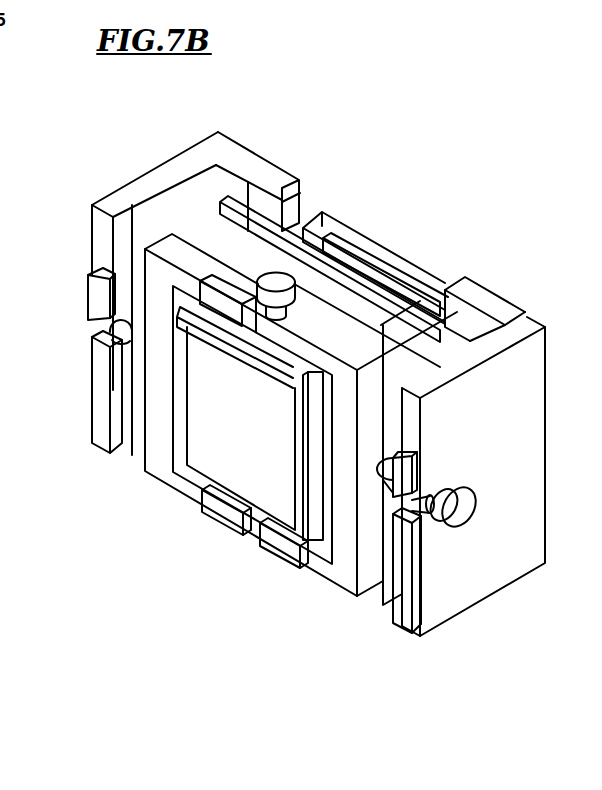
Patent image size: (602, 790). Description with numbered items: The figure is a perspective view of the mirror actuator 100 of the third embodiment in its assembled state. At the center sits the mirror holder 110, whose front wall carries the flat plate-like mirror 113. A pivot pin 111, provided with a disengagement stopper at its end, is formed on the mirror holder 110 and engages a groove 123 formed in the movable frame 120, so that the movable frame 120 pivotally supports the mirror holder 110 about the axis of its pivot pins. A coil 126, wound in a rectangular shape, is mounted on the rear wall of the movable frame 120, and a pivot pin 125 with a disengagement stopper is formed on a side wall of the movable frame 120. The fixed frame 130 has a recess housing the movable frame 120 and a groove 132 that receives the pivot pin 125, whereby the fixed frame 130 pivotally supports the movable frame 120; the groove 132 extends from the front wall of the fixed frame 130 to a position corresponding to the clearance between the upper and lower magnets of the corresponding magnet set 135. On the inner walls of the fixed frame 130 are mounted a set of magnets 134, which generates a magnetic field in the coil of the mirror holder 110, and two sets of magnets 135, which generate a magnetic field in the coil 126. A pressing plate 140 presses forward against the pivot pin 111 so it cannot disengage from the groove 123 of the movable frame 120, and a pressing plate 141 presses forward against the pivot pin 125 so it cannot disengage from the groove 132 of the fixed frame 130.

The mirror actuator 100 is at (438, 162).
The mirror holder 110 is at (293, 368).
The pivot pin 111 is at (367, 278).
The mirror 113 is at (210, 473).
The movable frame 120 is at (182, 243).
The groove 123 is at (252, 525).
The pivot pin 125 is at (462, 489).
The coil 126 is at (274, 283).
The fixed frame 130 is at (463, 600).
The groove 132 is at (110, 333).
The set of magnets 134 is at (396, 294).
The set of magnets 135 is at (243, 180).
The pressing plate 140 is at (273, 350).
The pressing plate 141 is at (103, 367).